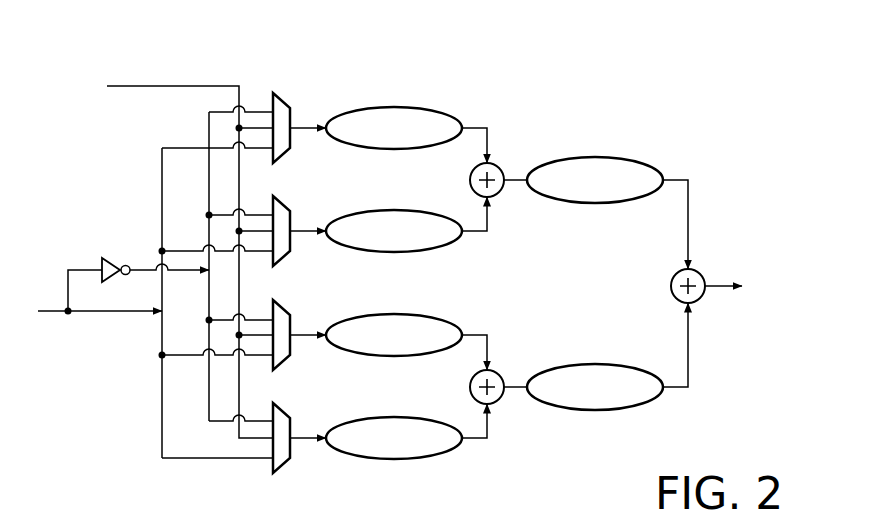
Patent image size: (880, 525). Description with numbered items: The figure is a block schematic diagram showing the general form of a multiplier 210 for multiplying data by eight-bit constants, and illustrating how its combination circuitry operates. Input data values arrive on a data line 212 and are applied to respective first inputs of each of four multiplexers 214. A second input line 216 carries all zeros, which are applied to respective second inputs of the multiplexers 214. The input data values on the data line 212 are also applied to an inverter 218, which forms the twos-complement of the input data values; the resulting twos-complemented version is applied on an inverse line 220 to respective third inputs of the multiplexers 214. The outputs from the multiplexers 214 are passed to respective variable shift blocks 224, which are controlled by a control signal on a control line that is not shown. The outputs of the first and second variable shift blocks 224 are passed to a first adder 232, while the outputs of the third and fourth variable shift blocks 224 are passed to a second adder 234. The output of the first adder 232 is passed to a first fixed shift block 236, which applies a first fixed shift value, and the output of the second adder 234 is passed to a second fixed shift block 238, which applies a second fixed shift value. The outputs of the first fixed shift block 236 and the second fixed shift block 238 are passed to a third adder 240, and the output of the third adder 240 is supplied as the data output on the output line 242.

The multiplexer 210 is at (527, 95).
The data line 212 is at (50, 309).
The multiplexers 214 is at (283, 99).
The second input line 216 is at (173, 84).
The inverter 218 is at (104, 257).
The inverse line 220 is at (144, 267).
The variable shift blocks 224 is at (395, 106).
The first adder 232 is at (496, 167).
The second adder 234 is at (496, 373).
The first fixed shift block 236 is at (597, 156).
The second fixed shift block 238 is at (597, 363).
The third adder 240 is at (676, 273).
The output line 242 is at (716, 282).